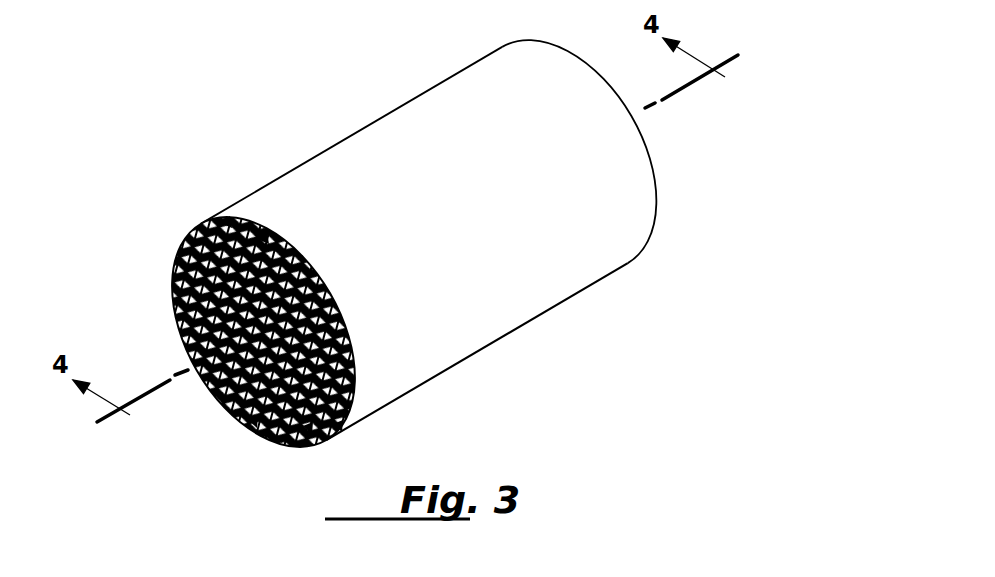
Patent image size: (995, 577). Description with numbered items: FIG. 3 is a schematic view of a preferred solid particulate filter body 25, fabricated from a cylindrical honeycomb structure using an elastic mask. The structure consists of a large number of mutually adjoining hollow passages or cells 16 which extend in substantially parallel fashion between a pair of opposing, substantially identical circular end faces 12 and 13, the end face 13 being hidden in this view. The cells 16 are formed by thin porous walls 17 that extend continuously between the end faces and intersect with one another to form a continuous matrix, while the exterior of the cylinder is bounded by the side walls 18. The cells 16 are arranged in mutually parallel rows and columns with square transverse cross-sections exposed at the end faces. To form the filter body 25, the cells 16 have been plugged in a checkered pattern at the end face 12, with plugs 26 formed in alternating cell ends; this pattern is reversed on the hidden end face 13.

The end face 12 is at (167, 273).
The end face 13 is at (658, 203).
The cells 16 is at (307, 433).
The porous walls 17 is at (256, 428).
The side walls 18 is at (518, 195).
The solid particulate filter body 25 is at (562, 310).
The plugs 26 is at (263, 245).